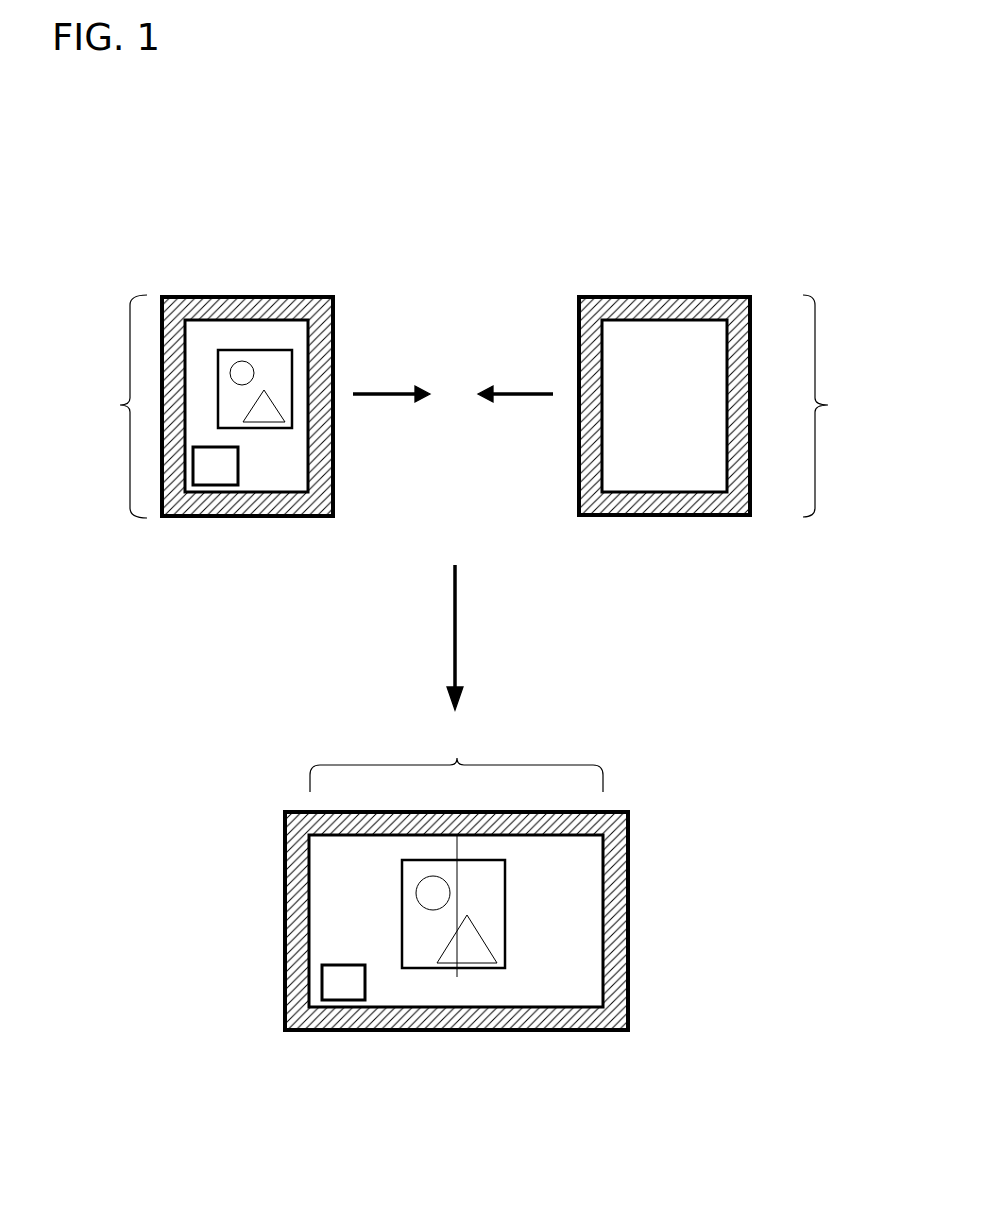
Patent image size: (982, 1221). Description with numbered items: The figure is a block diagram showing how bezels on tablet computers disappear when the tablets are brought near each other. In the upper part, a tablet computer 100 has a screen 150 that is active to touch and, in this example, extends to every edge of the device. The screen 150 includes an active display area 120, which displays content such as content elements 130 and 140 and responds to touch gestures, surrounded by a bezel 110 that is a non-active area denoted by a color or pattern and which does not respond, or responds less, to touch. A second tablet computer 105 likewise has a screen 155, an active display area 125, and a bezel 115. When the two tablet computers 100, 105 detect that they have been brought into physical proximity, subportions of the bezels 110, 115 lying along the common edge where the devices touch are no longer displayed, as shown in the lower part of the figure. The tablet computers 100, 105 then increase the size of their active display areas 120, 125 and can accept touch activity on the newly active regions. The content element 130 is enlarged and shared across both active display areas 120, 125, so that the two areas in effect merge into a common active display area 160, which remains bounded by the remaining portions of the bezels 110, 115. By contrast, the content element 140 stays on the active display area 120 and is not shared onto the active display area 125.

The tablet computer 100 is at (367, 649).
The tablet computer 105 is at (654, 648).
The bezel 110 is at (323, 348).
The bezel 115 is at (740, 380).
The active display area 120 is at (310, 458).
The active display area 125 is at (727, 465).
The content element 130 is at (308, 383).
The content element 140 is at (217, 467).
The screen 150 is at (112, 406).
The screen 155 is at (842, 406).
The common active display area 160 is at (456, 761).